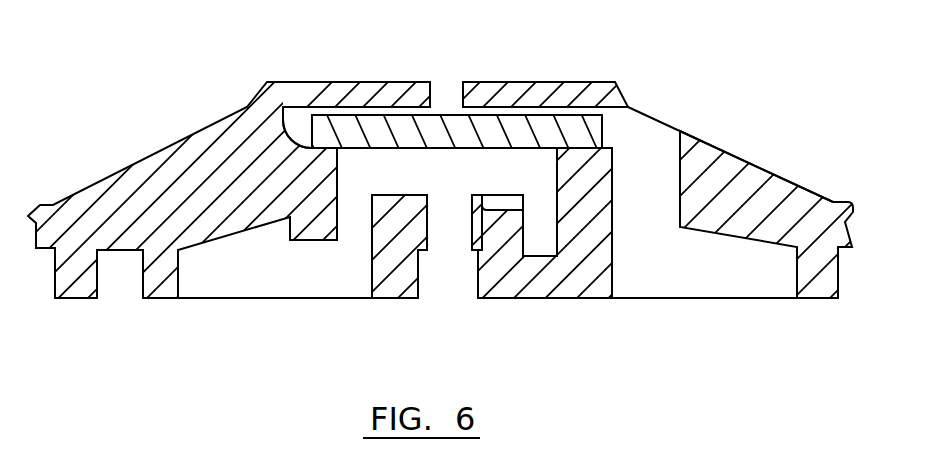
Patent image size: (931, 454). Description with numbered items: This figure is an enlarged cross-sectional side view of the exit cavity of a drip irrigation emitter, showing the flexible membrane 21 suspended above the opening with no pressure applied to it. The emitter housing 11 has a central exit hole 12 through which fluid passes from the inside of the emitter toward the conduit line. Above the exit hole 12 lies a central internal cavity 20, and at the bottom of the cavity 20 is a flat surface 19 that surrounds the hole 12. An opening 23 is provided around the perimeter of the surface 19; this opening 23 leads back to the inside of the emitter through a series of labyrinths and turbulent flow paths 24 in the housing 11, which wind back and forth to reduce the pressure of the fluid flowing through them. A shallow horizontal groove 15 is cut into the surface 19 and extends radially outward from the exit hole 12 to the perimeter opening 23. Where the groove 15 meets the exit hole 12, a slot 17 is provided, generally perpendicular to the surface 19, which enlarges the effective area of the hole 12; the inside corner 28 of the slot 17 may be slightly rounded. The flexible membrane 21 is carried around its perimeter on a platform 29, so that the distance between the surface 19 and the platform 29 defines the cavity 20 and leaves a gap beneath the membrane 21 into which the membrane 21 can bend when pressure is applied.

The housing 11 is at (574, 283).
The central exit hole 12 is at (452, 272).
The shallow horizontal groove 15 is at (507, 200).
The slot 17 is at (472, 219).
The flat surface 19 is at (400, 193).
The central internal cavity 20 is at (500, 173).
The flexible membrane 21 is at (438, 132).
The opening 23 is at (360, 200).
The labyrinths and turbulent flow paths 24 is at (245, 262).
The inside corner 28 is at (485, 208).
The platform 29 is at (585, 148).